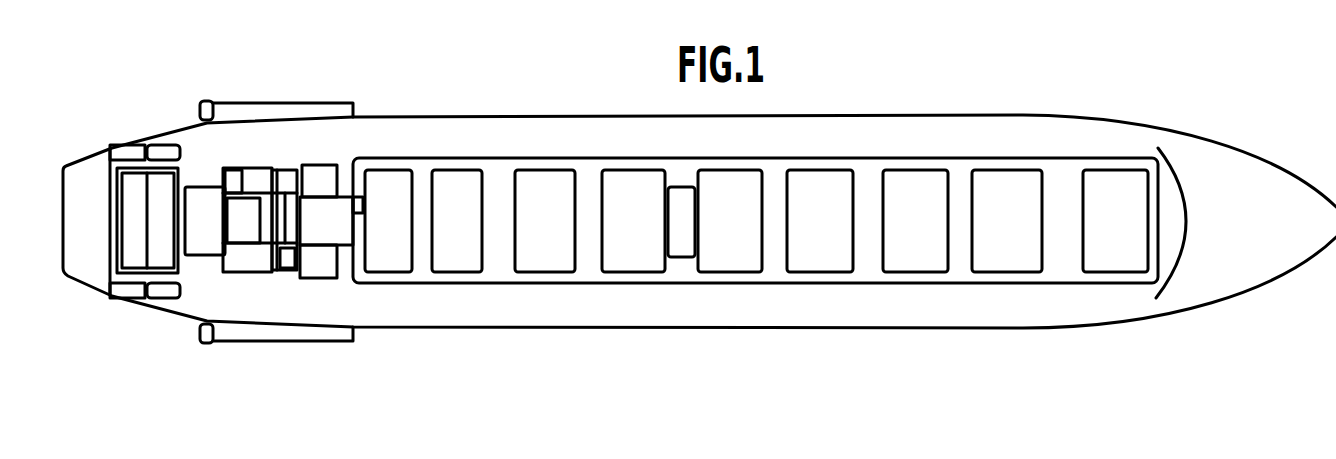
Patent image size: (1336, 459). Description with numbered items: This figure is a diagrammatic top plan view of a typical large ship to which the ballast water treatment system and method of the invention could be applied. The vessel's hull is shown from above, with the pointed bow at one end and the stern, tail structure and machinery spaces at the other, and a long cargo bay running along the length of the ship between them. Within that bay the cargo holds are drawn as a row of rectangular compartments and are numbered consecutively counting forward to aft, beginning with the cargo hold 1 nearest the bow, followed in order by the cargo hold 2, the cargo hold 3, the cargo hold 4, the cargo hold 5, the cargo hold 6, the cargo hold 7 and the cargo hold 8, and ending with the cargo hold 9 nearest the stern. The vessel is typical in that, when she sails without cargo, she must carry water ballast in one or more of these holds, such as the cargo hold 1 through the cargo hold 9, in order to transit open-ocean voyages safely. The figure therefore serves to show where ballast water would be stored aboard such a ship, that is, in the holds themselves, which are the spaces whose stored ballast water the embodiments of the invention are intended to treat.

The cargo hold 1 is at (1107, 236).
The cargo hold 2 is at (999, 236).
The cargo hold 3 is at (908, 236).
The cargo hold 4 is at (812, 236).
The cargo hold 5 is at (722, 236).
The cargo hold 6 is at (625, 236).
The cargo hold 7 is at (537, 236).
The cargo hold 8 is at (449, 236).
The cargo hold 9 is at (380, 236).